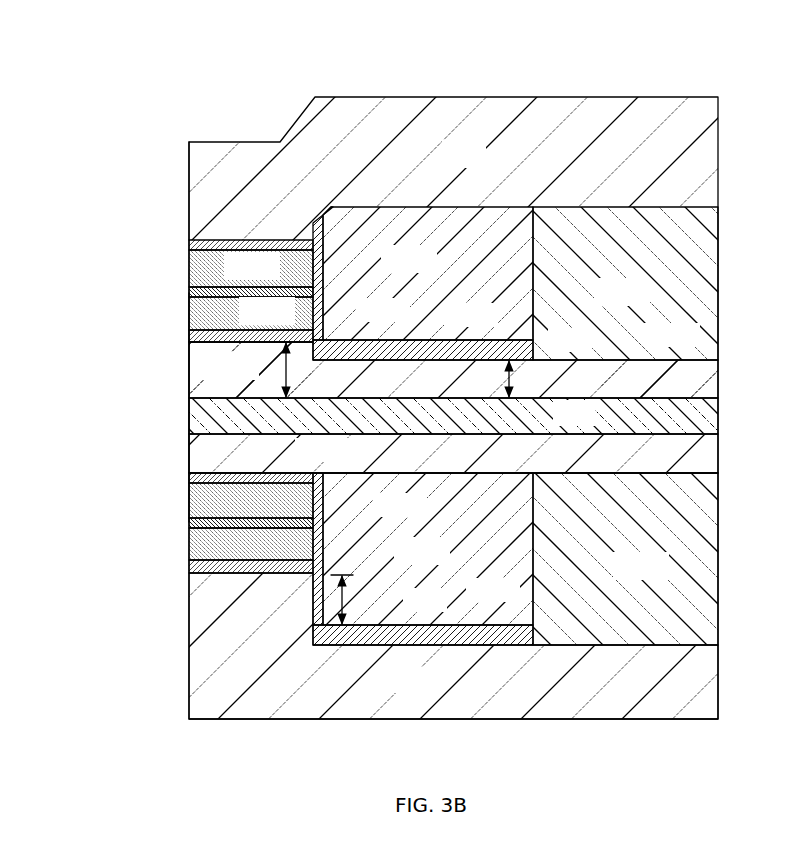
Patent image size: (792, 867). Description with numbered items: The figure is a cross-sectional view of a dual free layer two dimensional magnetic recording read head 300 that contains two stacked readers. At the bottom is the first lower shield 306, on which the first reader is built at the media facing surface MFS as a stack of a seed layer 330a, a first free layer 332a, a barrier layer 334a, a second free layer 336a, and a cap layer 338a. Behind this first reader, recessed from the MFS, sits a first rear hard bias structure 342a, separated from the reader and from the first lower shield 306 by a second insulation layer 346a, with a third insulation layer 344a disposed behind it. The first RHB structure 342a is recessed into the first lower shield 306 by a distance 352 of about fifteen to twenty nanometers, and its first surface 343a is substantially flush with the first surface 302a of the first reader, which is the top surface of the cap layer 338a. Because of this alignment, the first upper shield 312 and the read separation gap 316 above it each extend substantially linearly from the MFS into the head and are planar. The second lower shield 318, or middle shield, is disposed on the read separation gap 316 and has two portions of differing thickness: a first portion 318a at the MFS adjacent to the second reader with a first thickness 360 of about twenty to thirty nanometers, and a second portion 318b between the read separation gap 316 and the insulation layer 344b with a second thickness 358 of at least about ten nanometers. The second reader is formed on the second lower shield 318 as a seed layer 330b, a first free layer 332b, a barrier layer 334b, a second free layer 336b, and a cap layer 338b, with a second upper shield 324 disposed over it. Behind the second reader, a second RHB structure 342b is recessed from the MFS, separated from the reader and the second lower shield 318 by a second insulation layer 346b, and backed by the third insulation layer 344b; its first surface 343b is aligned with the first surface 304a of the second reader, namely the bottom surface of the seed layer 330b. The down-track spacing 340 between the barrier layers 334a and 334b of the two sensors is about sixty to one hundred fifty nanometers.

The DFL TDMR read head 300 is at (150, 60).
The media facing surface MFS is at (164, 197).
The second upper shield 324 is at (444, 167).
The second RHB structure 342b is at (383, 270).
The third insulation layer 344b is at (596, 303).
The first surface of the second RHB structure 343b is at (385, 339).
The second insulation layer 346b is at (470, 346).
The second thickness 358 is at (511, 378).
The second portion of the second lower shield 318b is at (622, 371).
The second lower shield 318 is at (200, 383).
The first portion of the second lower shield 318a is at (205, 377).
The first thickness 360 is at (286, 378).
The read separation gap 316 is at (555, 424).
The first upper shield 312 is at (706, 456).
The first surface of the first reader 302a is at (283, 473).
The cap layer 338b is at (189, 243).
The second free layer 336b is at (226, 277).
The barrier layer 334b is at (189, 291).
The first free layer 332b is at (241, 322).
The seed layer 330b is at (189, 336).
The first surface of the second reader 304a is at (189, 351).
The down-track spacing 340 is at (173, 291).
The cap layer 338a is at (189, 474).
The second free layer 336a is at (205, 505).
The barrier layer 334a is at (189, 523).
The first free layer 332a is at (189, 545).
The seed layer 330a is at (189, 567).
The first RHB structure 342a is at (396, 562).
The third insulation layer 344a is at (615, 577).
The first surface of the first RHB structure 343a is at (402, 475).
The second insulation layer 346a is at (493, 635).
The distance 352 is at (344, 600).
The first lower shield 306 is at (386, 692).